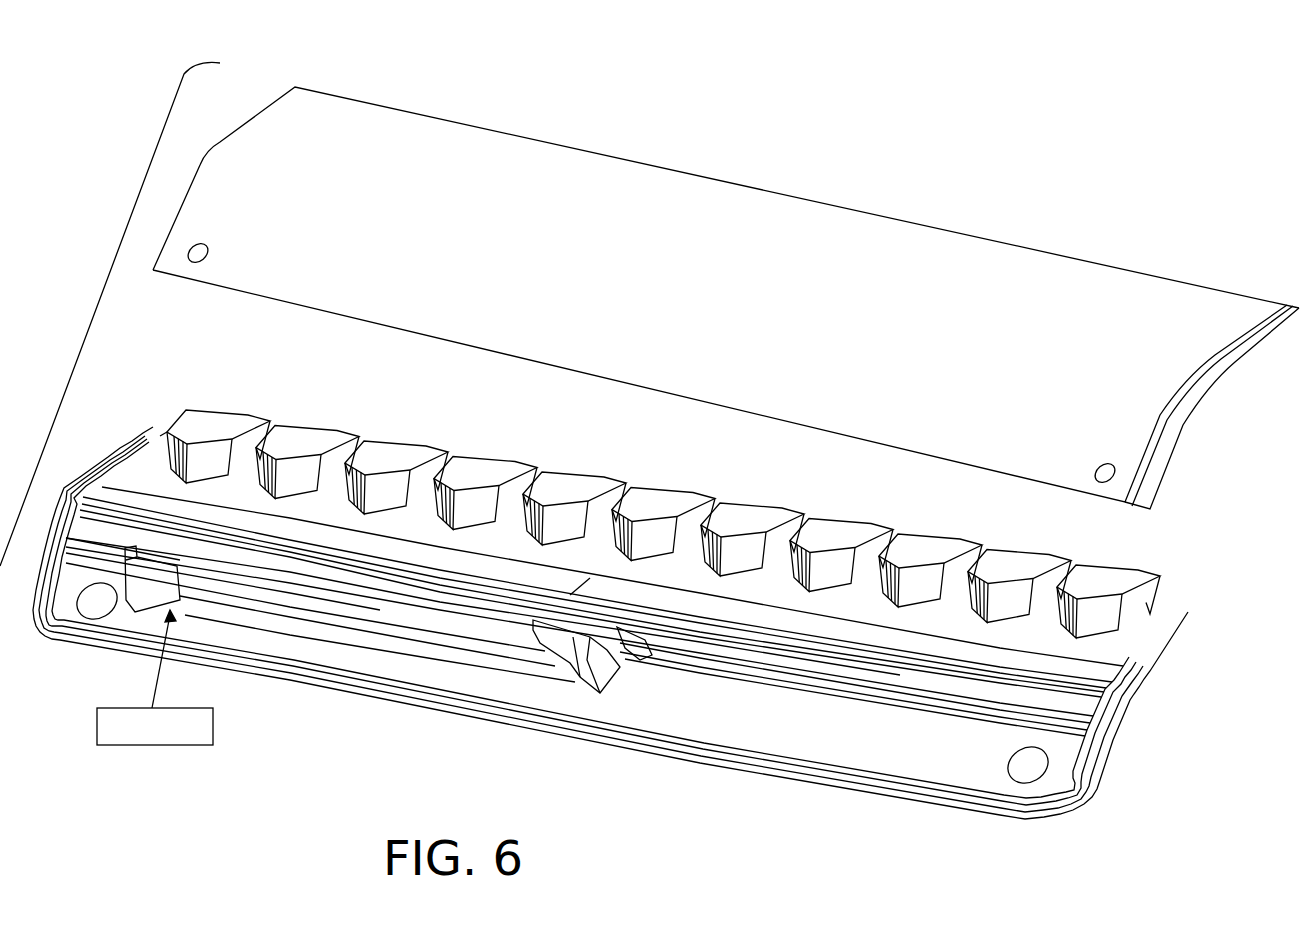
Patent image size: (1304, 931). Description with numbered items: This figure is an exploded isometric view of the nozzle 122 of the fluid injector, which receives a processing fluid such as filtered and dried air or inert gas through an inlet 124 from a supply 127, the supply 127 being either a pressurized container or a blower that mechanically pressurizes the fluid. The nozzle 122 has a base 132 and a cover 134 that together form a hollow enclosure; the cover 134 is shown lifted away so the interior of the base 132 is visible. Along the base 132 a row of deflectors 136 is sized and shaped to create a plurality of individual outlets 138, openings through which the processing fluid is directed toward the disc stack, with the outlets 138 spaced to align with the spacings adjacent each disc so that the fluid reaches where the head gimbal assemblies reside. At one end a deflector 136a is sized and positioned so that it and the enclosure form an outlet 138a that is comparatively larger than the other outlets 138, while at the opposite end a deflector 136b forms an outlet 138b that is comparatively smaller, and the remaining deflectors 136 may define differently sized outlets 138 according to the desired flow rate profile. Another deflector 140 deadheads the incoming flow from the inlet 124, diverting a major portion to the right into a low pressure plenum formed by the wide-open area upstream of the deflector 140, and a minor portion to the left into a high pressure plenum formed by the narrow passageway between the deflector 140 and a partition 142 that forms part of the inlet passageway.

The nozzle 122 is at (153, 147).
The inlet 124 is at (228, 645).
The supply 127 is at (168, 748).
The base 132 is at (1095, 773).
The cover 134 is at (1070, 256).
The deflectors 136 is at (807, 523).
The deflector 136a is at (1098, 572).
The deflector 136b is at (217, 417).
The outlets 138 is at (463, 447).
The outlet 138a is at (1160, 602).
The outlet 138b is at (168, 422).
The deflector 140 is at (587, 603).
The partition 142 is at (197, 567).